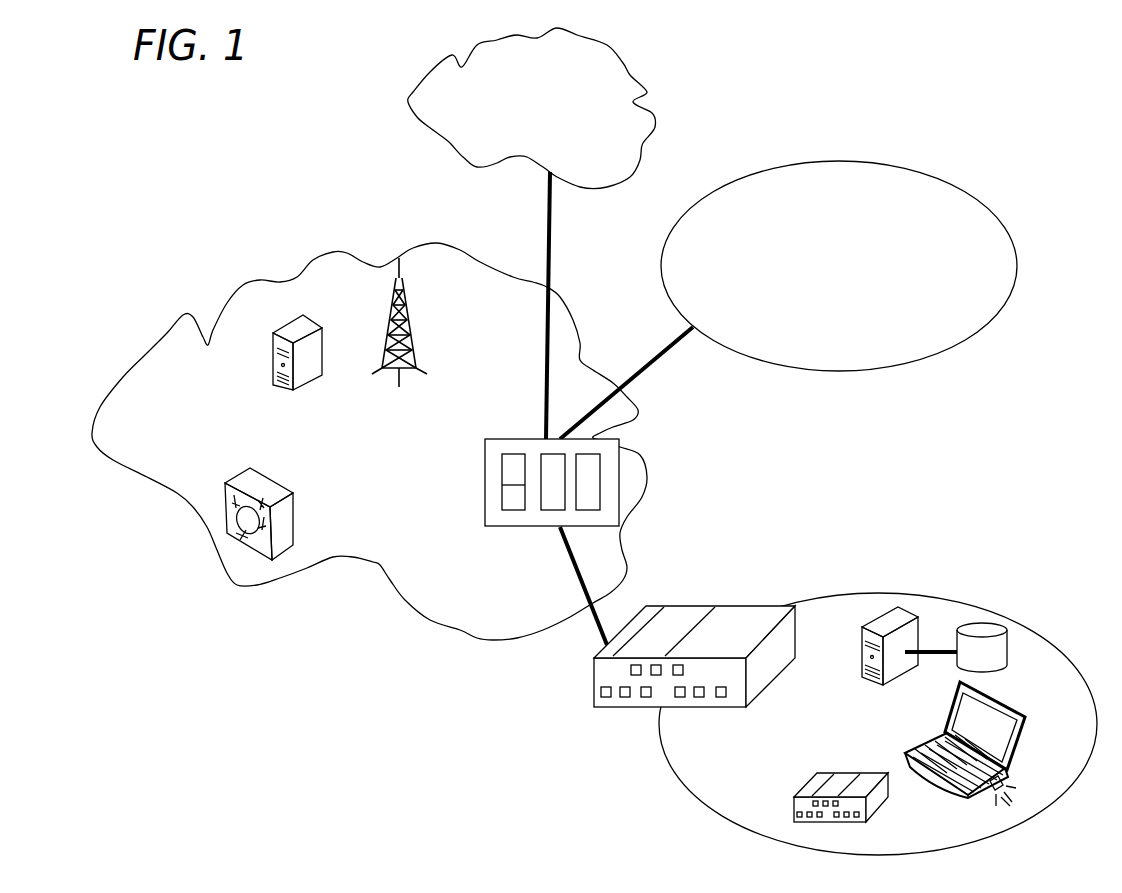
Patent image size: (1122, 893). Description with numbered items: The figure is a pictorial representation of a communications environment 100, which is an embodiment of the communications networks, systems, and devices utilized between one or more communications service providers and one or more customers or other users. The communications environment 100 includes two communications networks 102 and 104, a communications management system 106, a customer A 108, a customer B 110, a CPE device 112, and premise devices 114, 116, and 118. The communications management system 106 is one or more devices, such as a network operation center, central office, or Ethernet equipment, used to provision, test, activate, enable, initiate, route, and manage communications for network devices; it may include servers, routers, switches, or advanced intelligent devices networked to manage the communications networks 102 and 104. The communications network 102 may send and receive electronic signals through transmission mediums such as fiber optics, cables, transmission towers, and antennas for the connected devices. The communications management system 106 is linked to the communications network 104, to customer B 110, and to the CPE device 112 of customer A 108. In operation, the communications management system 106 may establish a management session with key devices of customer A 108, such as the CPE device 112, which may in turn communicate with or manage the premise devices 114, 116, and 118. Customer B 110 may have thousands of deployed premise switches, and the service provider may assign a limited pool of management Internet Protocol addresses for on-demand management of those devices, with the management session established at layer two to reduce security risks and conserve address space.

The communications environment 100 is at (80, 135).
The communications network 102 is at (388, 465).
The communications network 104 is at (548, 145).
The communications management system 106 is at (619, 470).
The customer A 108 is at (897, 748).
The customer B 110 is at (855, 292).
The CPE device 112 is at (715, 628).
The premise device 114 is at (897, 627).
The premise device 116 is at (980, 742).
The premise device 118 is at (800, 792).